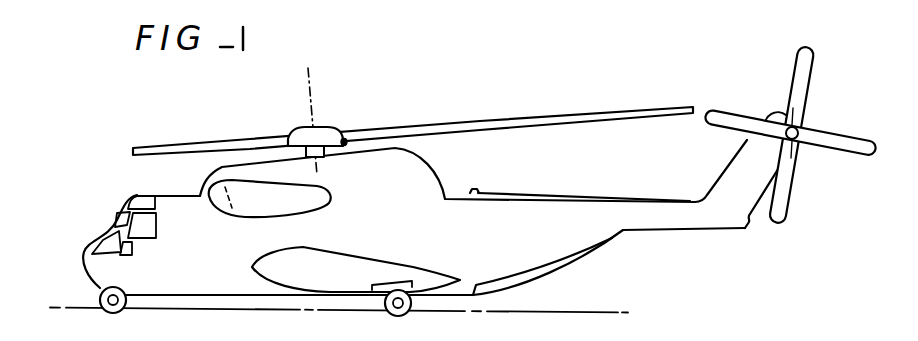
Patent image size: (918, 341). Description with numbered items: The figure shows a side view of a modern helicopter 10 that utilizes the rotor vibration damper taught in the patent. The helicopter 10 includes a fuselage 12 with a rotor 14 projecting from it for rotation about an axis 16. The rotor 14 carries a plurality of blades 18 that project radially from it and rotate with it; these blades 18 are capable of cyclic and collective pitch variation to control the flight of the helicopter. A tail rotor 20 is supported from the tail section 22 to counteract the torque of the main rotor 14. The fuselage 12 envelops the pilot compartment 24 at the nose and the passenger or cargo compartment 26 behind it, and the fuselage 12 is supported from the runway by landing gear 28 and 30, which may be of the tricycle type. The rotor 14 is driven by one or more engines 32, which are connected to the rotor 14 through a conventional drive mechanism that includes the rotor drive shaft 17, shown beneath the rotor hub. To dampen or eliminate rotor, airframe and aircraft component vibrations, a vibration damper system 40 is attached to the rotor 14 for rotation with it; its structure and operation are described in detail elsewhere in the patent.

The helicopter 10 is at (541, 83).
The fuselage 12 is at (523, 217).
The rotor 14 is at (322, 130).
The axis 16 is at (310, 88).
The rotor drive shaft 17 is at (323, 152).
The blades 18 is at (462, 127).
The tail rotor 20 is at (806, 76).
The tail section 22 is at (735, 161).
The pilot compartment 24 is at (127, 224).
The passenger or cargo compartment 26 is at (378, 241).
The landing gear 28 is at (107, 296).
The landing gear 30 is at (398, 311).
The engines 32 is at (253, 202).
The vibration damper system 40 is at (346, 140).